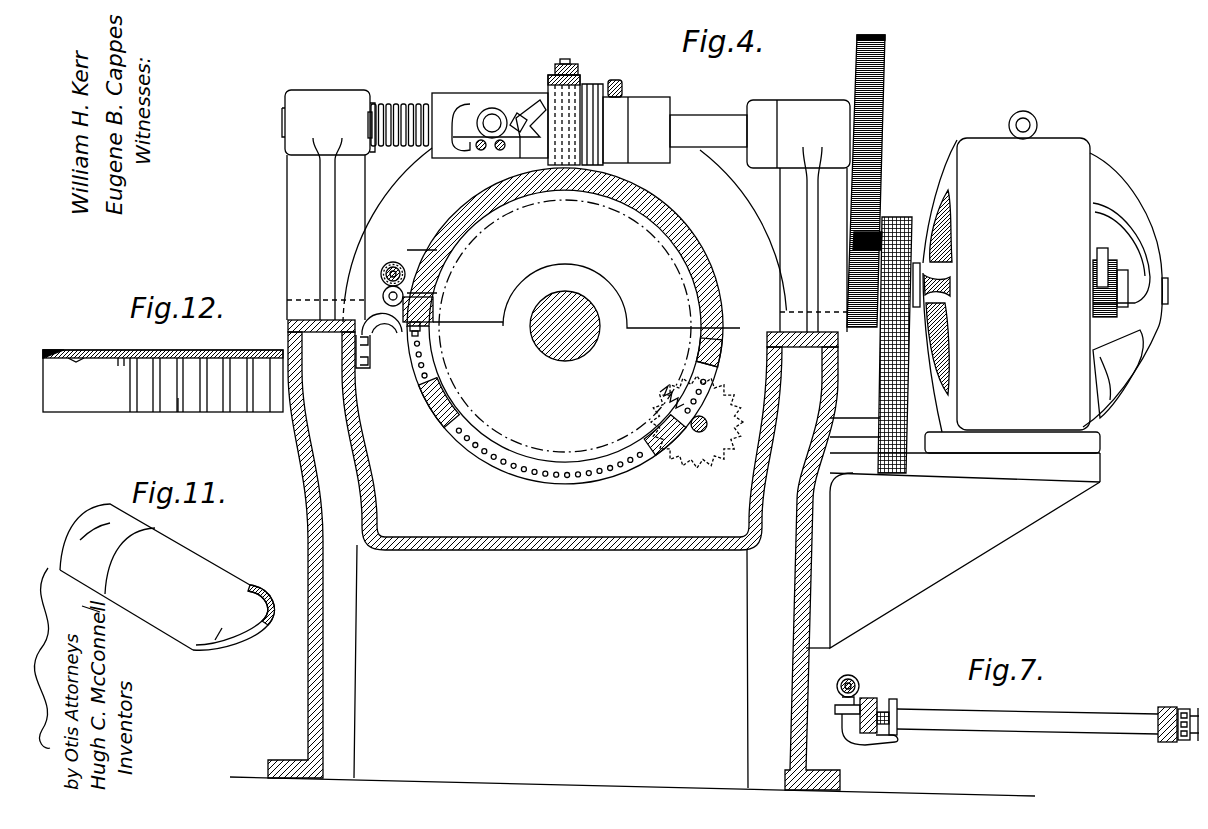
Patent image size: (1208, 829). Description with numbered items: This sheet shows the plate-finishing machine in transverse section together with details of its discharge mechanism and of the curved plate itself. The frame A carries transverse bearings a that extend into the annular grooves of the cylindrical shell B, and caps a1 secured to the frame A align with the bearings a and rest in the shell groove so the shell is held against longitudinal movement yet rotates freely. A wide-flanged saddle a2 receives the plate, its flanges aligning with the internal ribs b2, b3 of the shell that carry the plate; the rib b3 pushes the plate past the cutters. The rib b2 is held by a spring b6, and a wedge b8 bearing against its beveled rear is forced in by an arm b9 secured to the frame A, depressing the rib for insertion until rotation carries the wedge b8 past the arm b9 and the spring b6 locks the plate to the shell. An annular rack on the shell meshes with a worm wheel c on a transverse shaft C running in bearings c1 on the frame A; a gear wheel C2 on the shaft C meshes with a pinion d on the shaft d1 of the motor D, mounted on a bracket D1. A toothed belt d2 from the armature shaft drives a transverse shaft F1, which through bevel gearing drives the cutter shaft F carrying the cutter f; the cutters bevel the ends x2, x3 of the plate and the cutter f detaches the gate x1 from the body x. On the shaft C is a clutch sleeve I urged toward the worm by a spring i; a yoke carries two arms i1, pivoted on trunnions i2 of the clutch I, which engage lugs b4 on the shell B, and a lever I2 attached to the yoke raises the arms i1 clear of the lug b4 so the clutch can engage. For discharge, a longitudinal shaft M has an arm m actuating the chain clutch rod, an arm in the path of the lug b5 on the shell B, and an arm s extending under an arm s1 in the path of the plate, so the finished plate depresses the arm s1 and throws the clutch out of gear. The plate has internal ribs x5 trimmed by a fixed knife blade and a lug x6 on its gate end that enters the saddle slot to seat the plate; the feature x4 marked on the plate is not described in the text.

In FIG. 4, the frame A is at (554, 555).
In FIG. 4, the transverse bearings a is at (562, 364).
In FIG. 4, the caps a1 is at (462, 192).
In FIG. 4, the saddle a2 is at (575, 282).
In FIG. 4, the cylindrical shell B is at (565, 267).
In FIG. 4, the internal rib b2 is at (432, 323).
In FIG. 4, the internal rib b3 is at (696, 352).
In FIG. 4, the lugs b4 is at (608, 160).
In FIG. 4, the lug b5 is at (420, 262).
In FIG. 4, the spring b6 is at (411, 336).
In FIG. 4, the wedge b8 is at (382, 295).
In FIG. 4, the arm b9 is at (379, 340).
In FIG. 4, the longitudinal shaft M is at (390, 262).
In FIG. 7, the longitudinal shaft M is at (864, 667).
In FIG. 4, the arm m is at (393, 268).
In FIG. 4, the cutter shaft F is at (697, 422).
In FIG. 4, the cutter f is at (660, 392).
In FIG. 4, the transverse shaft F1 is at (855, 415).
In FIG. 4, the bearings c1 is at (566, 211).
In FIG. 4, the worm wheel c is at (609, 112).
In FIG. 4, the transverse shaft C is at (706, 128).
In FIG. 4, the gear wheel C2 is at (886, 96).
In FIG. 4, the spring i is at (398, 114).
In FIG. 4, the clutch sleeve I is at (478, 93).
In FIG. 4, the arms i1 is at (518, 158).
In FIG. 4, the trunnions i2 is at (494, 118).
In FIG. 4, the lever I2 is at (566, 56).
In FIG. 4, the pinion d is at (885, 345).
In FIG. 4, the motor shaft d1 is at (932, 266).
In FIG. 4, the belt d2 is at (1017, 318).
In FIG. 4, the motor D is at (999, 296).
In FIG. 4, the bracket D1 is at (953, 560).
In FIG. 7, the arm s is at (866, 729).
In FIG. 7, the arm s1 is at (889, 706).
In FIG. 12, the plate body x is at (163, 372).
In FIG. 11, the plate body x is at (155, 577).
In FIG. 12, the gate x1 is at (92, 350).
In FIG. 11, the gate x1 is at (95, 538).
In FIG. 11, the plate end x2 is at (235, 626).
In FIG. 12, the plate end x3 is at (118, 350).
In FIG. 11, the plate end x3 is at (67, 614).
In FIG. 11, the flange x4 is at (224, 627).
In FIG. 12, the internal ribs x5 is at (193, 413).
In FIG. 11, the internal ribs x5 is at (253, 605).
In FIG. 12, the lug x6 is at (80, 366).